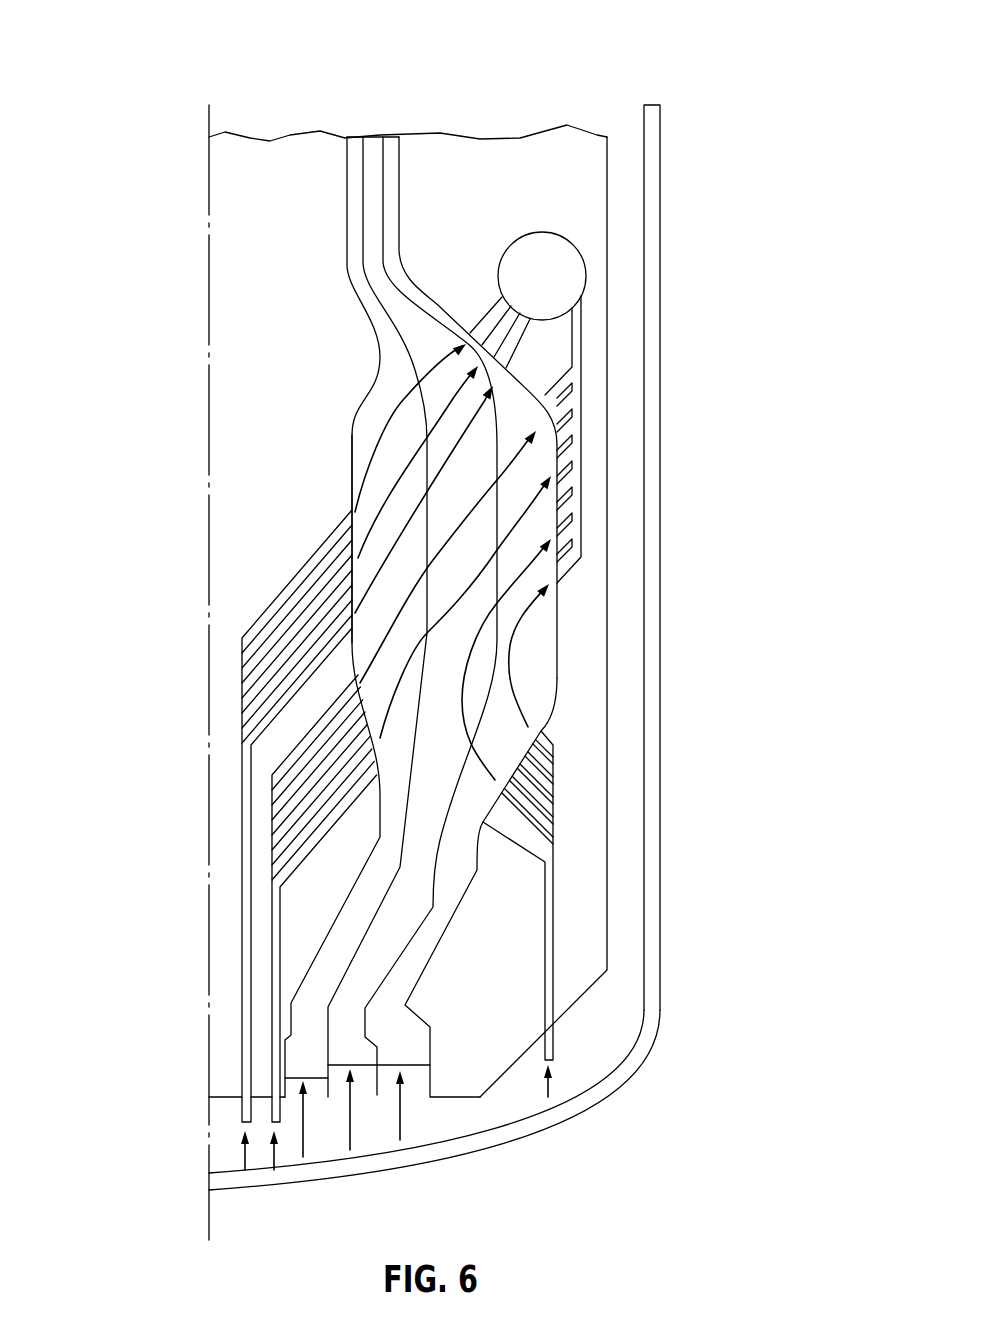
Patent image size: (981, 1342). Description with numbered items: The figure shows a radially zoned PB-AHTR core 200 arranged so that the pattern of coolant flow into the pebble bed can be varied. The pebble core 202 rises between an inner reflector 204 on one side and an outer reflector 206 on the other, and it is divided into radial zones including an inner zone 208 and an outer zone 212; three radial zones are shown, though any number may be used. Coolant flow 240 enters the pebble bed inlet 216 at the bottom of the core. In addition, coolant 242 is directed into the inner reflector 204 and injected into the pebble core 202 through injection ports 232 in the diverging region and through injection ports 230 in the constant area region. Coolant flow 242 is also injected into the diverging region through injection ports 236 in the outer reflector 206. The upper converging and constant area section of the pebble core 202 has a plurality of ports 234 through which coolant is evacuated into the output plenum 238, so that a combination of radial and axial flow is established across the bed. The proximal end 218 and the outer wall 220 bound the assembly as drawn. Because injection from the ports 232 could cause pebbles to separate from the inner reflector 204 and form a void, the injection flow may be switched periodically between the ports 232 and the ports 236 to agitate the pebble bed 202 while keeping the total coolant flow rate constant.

The core 200 is at (124, 45).
The pebble core 202 is at (367, 395).
The inner reflector 204 is at (248, 253).
The outer reflector 206 is at (580, 888).
The inner zone 208 is at (365, 450).
The outer zone 212 is at (538, 688).
The pebble bed inlet 216 is at (457, 1127).
The proximal end of flexible circuit 218 is at (391, 137).
The outer sheath 220 is at (661, 342).
The injection ports 230 is at (238, 690).
The injection ports 232 is at (268, 860).
The ports 234 is at (583, 432).
The injection ports 236 is at (552, 777).
The output plenum 238 is at (582, 250).
The coolant flow 240 is at (352, 1127).
The coolant 242 is at (245, 1167).